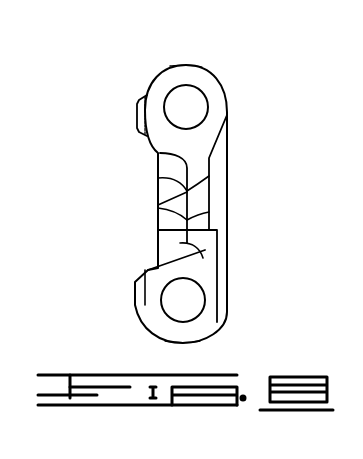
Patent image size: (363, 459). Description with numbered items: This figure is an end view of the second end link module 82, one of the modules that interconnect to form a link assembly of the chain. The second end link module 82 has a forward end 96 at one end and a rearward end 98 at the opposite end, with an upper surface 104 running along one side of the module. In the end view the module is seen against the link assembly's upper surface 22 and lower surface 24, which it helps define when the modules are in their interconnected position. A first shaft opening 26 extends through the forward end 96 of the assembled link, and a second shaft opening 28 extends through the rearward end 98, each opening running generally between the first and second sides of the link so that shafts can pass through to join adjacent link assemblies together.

The upper surface 22 is at (228, 193).
The lower surface 24 is at (185, 176).
The first shaft opening 26 is at (190, 87).
The second shaft opening 28 is at (176, 320).
The second end link module 82 is at (138, 112).
The forward end 96 is at (184, 63).
The rearward end 98 is at (174, 342).
The upper surface 104 is at (228, 148).